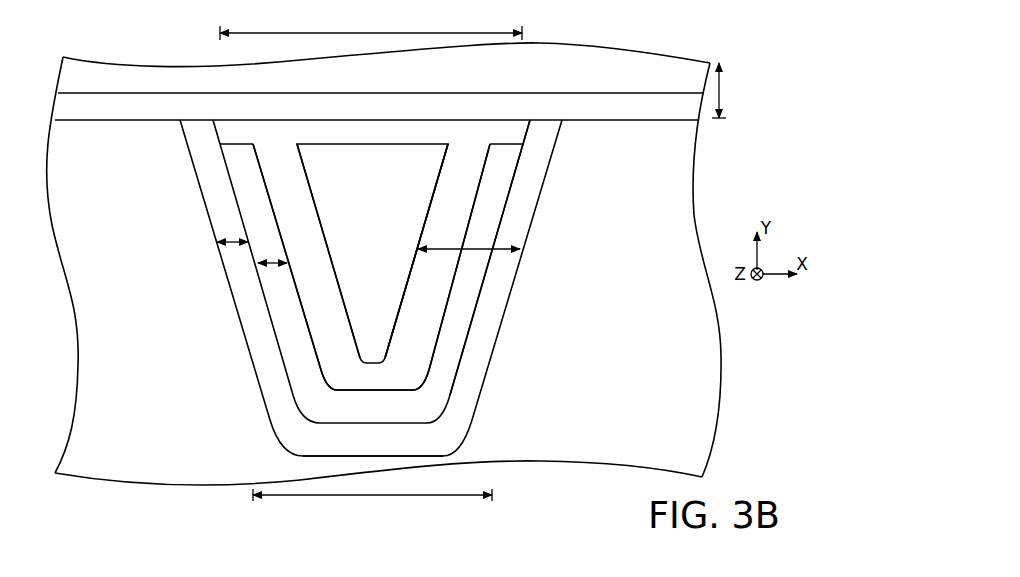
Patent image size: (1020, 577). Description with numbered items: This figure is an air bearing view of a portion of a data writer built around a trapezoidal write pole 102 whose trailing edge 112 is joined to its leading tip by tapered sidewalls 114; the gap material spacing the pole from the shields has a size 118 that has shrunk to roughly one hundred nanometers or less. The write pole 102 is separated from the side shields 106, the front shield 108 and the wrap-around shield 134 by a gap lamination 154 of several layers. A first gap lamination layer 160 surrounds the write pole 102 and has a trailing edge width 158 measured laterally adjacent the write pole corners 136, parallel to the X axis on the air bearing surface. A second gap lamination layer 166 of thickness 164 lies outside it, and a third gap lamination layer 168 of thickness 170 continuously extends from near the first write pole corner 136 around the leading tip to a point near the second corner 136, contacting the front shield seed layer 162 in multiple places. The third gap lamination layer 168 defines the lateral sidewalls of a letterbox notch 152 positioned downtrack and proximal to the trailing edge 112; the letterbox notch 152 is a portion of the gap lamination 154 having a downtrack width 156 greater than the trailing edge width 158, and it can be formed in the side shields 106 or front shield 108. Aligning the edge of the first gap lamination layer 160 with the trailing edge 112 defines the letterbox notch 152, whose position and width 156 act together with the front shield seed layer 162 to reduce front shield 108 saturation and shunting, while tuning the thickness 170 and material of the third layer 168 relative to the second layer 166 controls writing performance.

The write pole 102 is at (388, 308).
The side shields 106 is at (84, 462).
The front shield 108 is at (733, 90).
The trailing edge 112 is at (378, 145).
The tapered sidewalls 114 is at (426, 227).
The size of the gap material 118 is at (440, 252).
The wrap-around shield 134 is at (300, 468).
The write pole corners 136 is at (305, 149).
The letterbox notch 152 is at (502, 132).
The gap lamination 154 is at (542, 196).
The downtrack width of the letterbox notch 156 is at (371, 27).
The trailing edge width 158 is at (372, 504).
The first gap lamination layer 160 is at (59, 116).
The front shield seed layer 162 is at (388, 384).
The thickness of second gap lamination layer 164 is at (271, 264).
The second gap lamination layer 166 is at (388, 419).
The third gap lamination layer 168 is at (388, 451).
The thickness of third gap lamination layer 170 is at (232, 243).